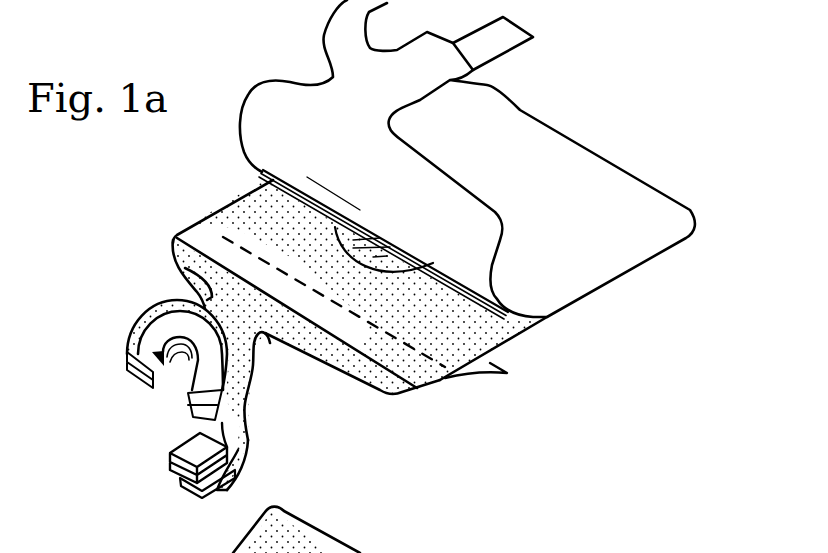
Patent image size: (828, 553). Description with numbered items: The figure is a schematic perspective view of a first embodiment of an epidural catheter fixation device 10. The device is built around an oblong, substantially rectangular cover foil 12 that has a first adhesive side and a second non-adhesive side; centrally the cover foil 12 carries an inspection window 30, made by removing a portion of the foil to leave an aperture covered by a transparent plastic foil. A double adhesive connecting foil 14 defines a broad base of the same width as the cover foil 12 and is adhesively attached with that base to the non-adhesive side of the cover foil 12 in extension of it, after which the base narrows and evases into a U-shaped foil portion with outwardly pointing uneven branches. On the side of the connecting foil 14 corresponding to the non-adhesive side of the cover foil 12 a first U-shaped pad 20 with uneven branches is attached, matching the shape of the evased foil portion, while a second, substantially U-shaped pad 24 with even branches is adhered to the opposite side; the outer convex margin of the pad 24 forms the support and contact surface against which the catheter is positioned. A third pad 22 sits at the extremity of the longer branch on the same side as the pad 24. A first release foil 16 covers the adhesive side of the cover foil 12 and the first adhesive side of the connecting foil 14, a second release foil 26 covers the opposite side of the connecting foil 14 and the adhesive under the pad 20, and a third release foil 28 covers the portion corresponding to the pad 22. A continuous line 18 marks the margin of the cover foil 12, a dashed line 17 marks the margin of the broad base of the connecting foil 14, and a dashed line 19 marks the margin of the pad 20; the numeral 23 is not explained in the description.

The epidural catheter fixation device 10 is at (583, 128).
The cover foil 12 is at (507, 333).
The double adhesive connecting foil 14 is at (358, 334).
The first release foil 16 is at (512, 36).
The dashed line 17 is at (225, 237).
The continuous line 18 is at (192, 233).
The dashed line 19 is at (172, 270).
The first U-shaped pad 20 is at (243, 447).
The third pad 22 is at (183, 442).
The cut end face 23 is at (128, 342).
The second pad 24 is at (160, 333).
The second release foil 26 is at (217, 490).
The third release foil 28 is at (188, 490).
The inspection window 30 is at (400, 263).